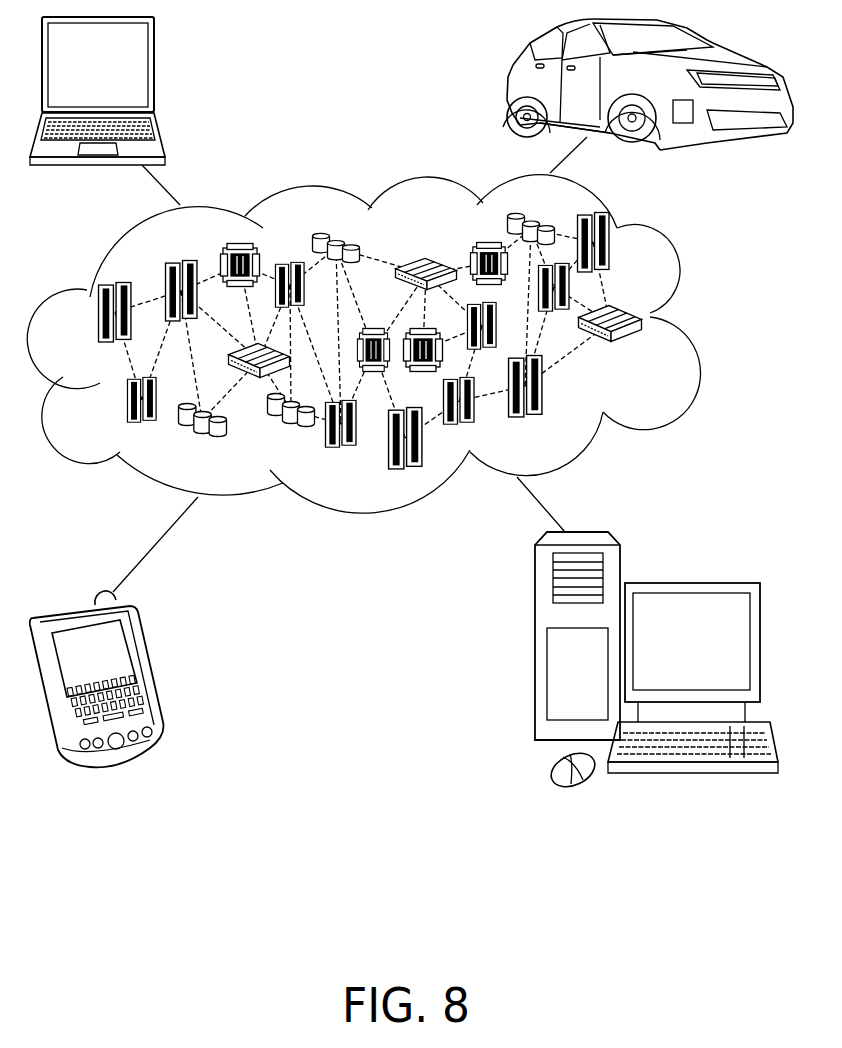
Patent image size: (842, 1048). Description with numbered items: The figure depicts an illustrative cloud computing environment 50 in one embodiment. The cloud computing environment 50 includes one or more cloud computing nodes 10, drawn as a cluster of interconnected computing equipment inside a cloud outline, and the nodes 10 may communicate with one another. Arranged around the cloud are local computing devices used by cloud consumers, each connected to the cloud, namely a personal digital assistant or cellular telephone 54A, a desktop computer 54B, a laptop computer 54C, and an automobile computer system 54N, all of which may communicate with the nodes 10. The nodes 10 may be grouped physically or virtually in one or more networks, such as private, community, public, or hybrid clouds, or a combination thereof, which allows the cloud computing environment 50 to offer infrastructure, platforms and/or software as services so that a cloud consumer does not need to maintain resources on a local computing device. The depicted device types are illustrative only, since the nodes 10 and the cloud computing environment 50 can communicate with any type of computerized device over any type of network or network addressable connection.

The cloud computing nodes 10 is at (645, 353).
The cloud computing environment 50 is at (693, 322).
The personal digital assistant or cellular telephone 54A is at (147, 667).
The desktop computer 54B is at (690, 582).
The laptop computer 54C is at (153, 72).
The automobile computer system 54N is at (512, 80).